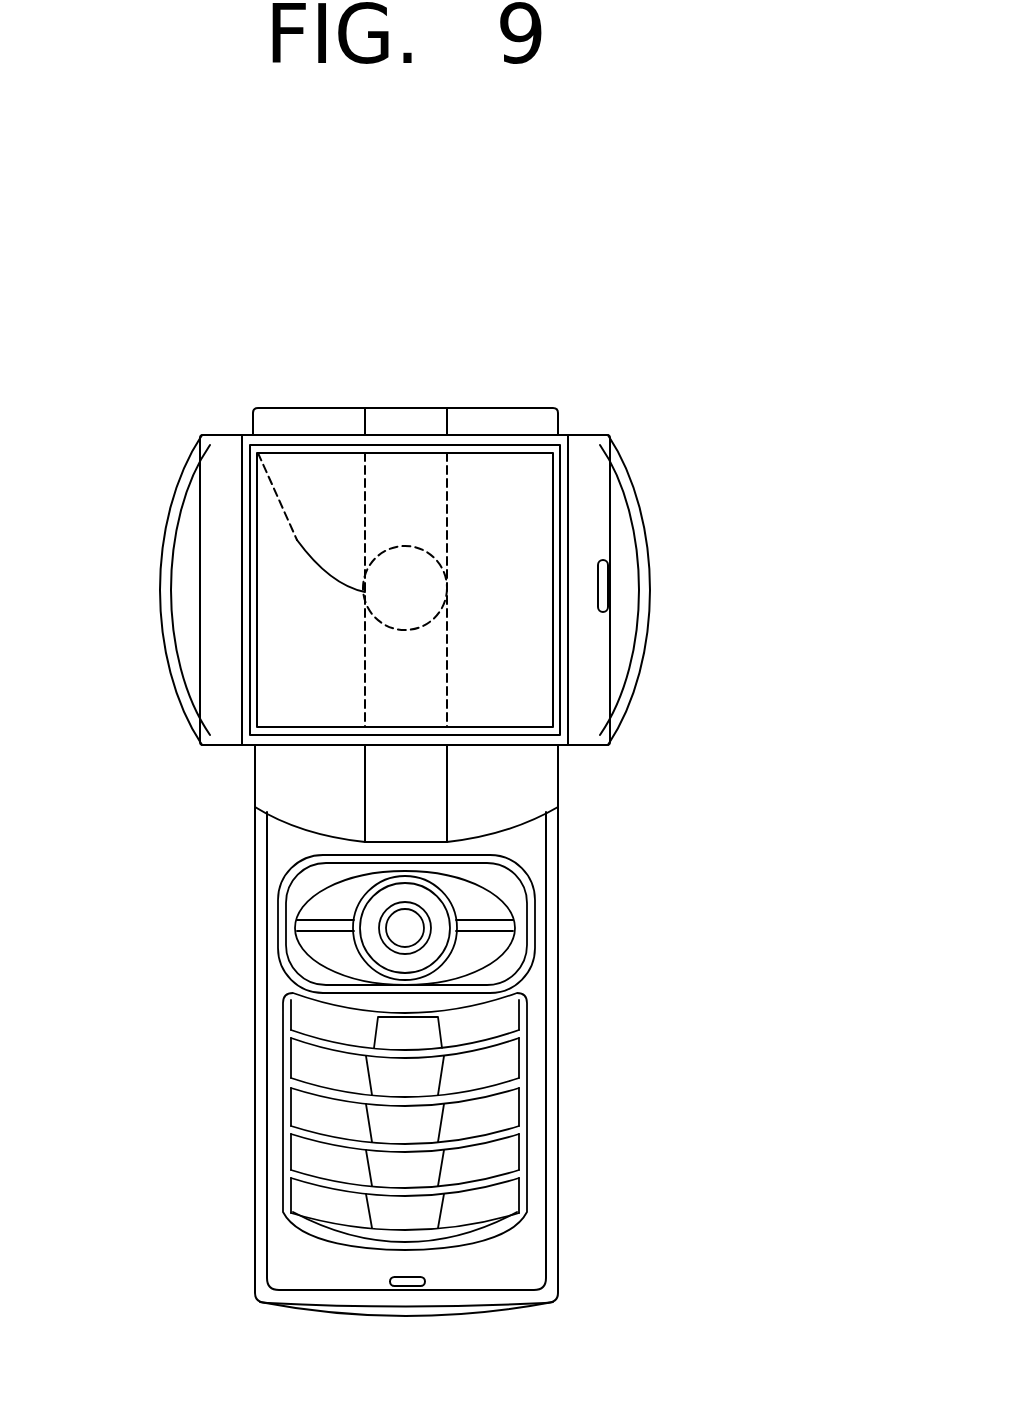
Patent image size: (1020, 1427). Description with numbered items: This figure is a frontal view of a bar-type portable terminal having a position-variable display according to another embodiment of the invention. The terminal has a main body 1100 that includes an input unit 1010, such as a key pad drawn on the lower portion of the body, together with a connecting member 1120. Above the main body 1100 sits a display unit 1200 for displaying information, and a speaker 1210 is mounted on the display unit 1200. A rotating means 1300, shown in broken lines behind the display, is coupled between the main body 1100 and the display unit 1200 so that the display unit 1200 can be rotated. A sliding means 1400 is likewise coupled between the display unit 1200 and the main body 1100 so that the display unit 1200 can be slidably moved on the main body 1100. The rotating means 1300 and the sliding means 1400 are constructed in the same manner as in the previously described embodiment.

The input unit 1010 is at (323, 955).
The main body 1100 is at (585, 990).
The connecting member 1120 is at (548, 778).
The display unit 1200 is at (650, 423).
The speaker 1210 is at (608, 583).
The rotating means 1300 is at (447, 545).
The sliding means 1400 is at (366, 424).